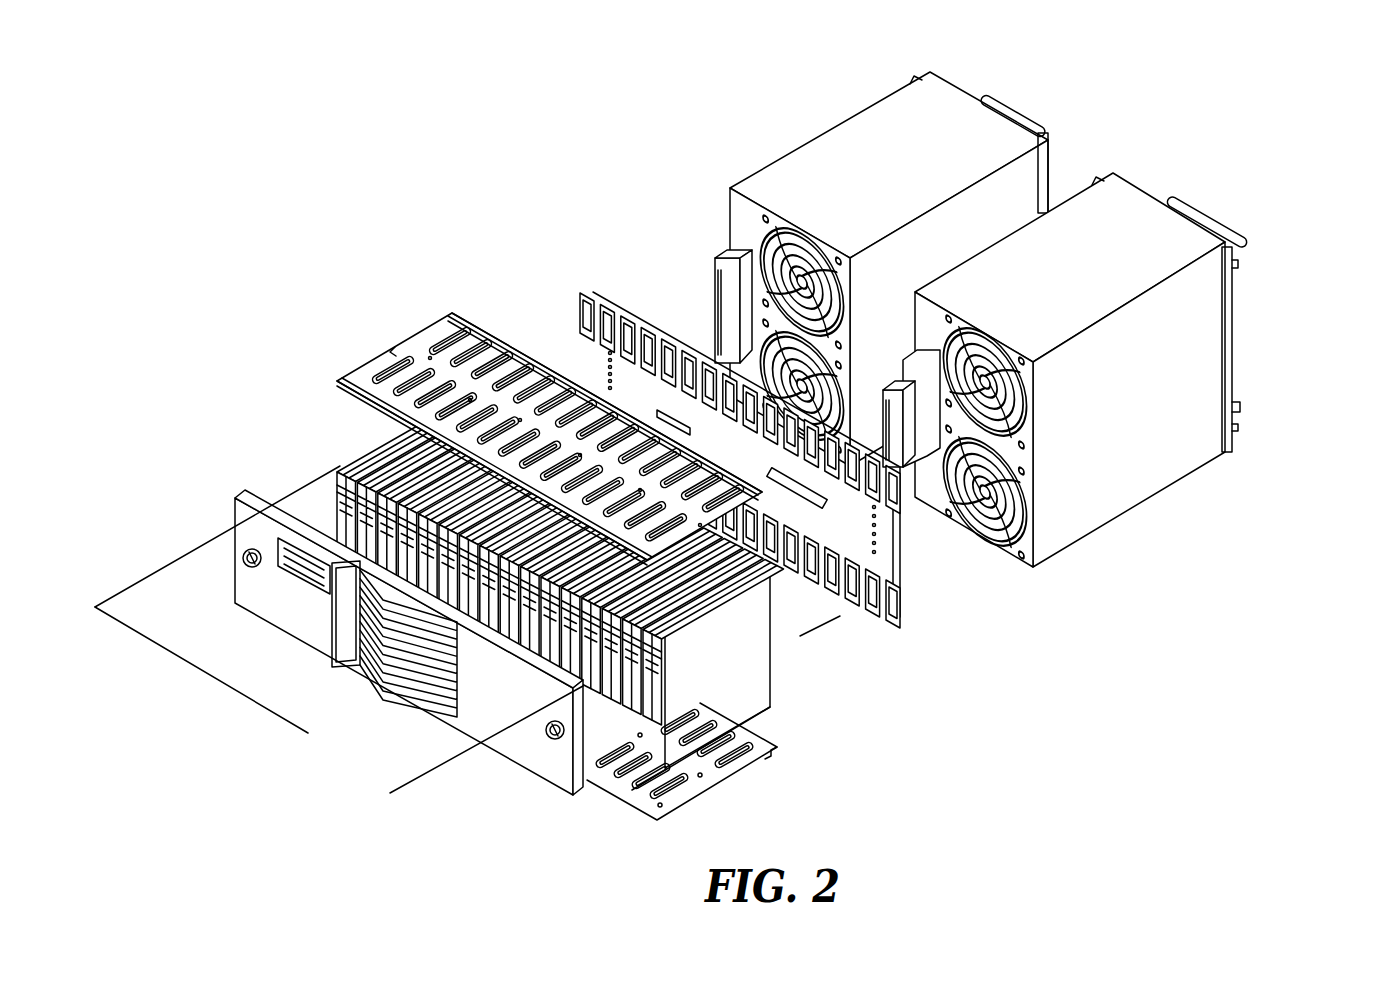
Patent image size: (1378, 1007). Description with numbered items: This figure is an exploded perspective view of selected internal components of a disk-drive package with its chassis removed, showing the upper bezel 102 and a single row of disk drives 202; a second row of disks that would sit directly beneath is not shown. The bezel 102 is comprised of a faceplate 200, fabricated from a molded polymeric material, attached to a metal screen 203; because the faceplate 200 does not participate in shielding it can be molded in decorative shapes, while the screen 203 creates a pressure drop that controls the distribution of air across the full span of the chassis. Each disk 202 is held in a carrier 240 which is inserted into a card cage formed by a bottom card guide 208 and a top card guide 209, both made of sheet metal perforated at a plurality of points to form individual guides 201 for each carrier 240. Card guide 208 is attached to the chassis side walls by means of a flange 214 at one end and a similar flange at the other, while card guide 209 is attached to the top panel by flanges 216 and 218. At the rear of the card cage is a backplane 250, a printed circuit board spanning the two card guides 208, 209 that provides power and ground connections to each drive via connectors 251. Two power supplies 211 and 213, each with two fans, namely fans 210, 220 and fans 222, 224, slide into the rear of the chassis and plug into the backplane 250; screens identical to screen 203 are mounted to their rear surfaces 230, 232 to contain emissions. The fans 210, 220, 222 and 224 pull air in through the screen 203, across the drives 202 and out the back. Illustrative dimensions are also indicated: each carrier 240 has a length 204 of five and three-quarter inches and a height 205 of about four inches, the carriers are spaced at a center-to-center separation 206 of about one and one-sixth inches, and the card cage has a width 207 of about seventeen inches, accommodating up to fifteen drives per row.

The upper bezel 102 is at (263, 735).
The faceplate 200 is at (256, 484).
The individual guides 201 is at (460, 389).
The disk drives 202 is at (747, 612).
The metal screen 203 is at (335, 654).
The carrier length 204 is at (752, 705).
The carrier height 205 is at (728, 534).
The center-to-center separation 206 is at (777, 561).
The card cage width 207 is at (395, 787).
The bottom card guide 208 is at (792, 746).
The top card guide 209 is at (464, 306).
The fan 210 is at (735, 175).
The power supply 211 is at (1052, 140).
The power supply 213 is at (1147, 177).
The flange 214 is at (710, 789).
The flange 216 is at (497, 314).
The flange 218 is at (332, 379).
The fan 220 is at (718, 268).
The fan 222 is at (1027, 390).
The fan 224 is at (1033, 493).
The rear surface 230 is at (1052, 160).
The rear surface 232 is at (1242, 300).
The disk-drive carrier 240 is at (696, 608).
The backplane 250 is at (907, 598).
The connectors 251 is at (879, 488).